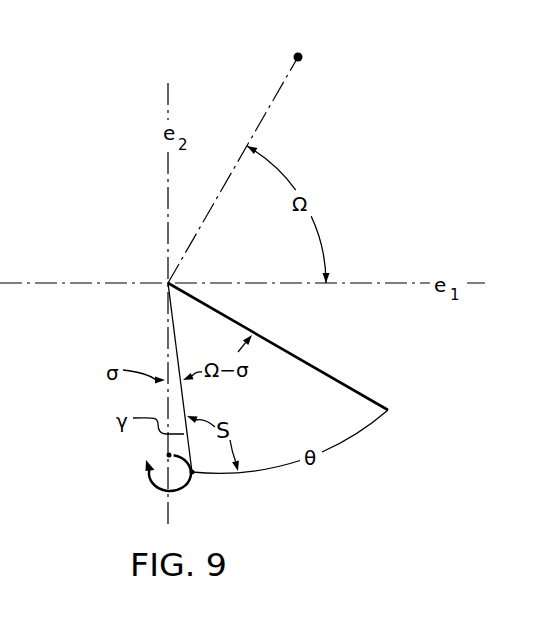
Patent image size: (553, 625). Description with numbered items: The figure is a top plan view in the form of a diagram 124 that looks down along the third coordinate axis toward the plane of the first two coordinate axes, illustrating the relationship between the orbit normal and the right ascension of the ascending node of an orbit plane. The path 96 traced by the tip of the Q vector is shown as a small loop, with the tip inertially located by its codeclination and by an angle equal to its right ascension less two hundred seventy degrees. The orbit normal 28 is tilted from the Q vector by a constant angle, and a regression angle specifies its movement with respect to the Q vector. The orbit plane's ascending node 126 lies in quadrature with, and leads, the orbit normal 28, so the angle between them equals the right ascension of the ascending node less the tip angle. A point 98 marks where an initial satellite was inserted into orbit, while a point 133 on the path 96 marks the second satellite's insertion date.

The diagram 124 is at (414, 129).
The ascending node 126 is at (303, 58).
The orbit normal 28 is at (360, 392).
The point 133 is at (193, 474).
The point 98 is at (167, 455).
The path 96 is at (148, 482).